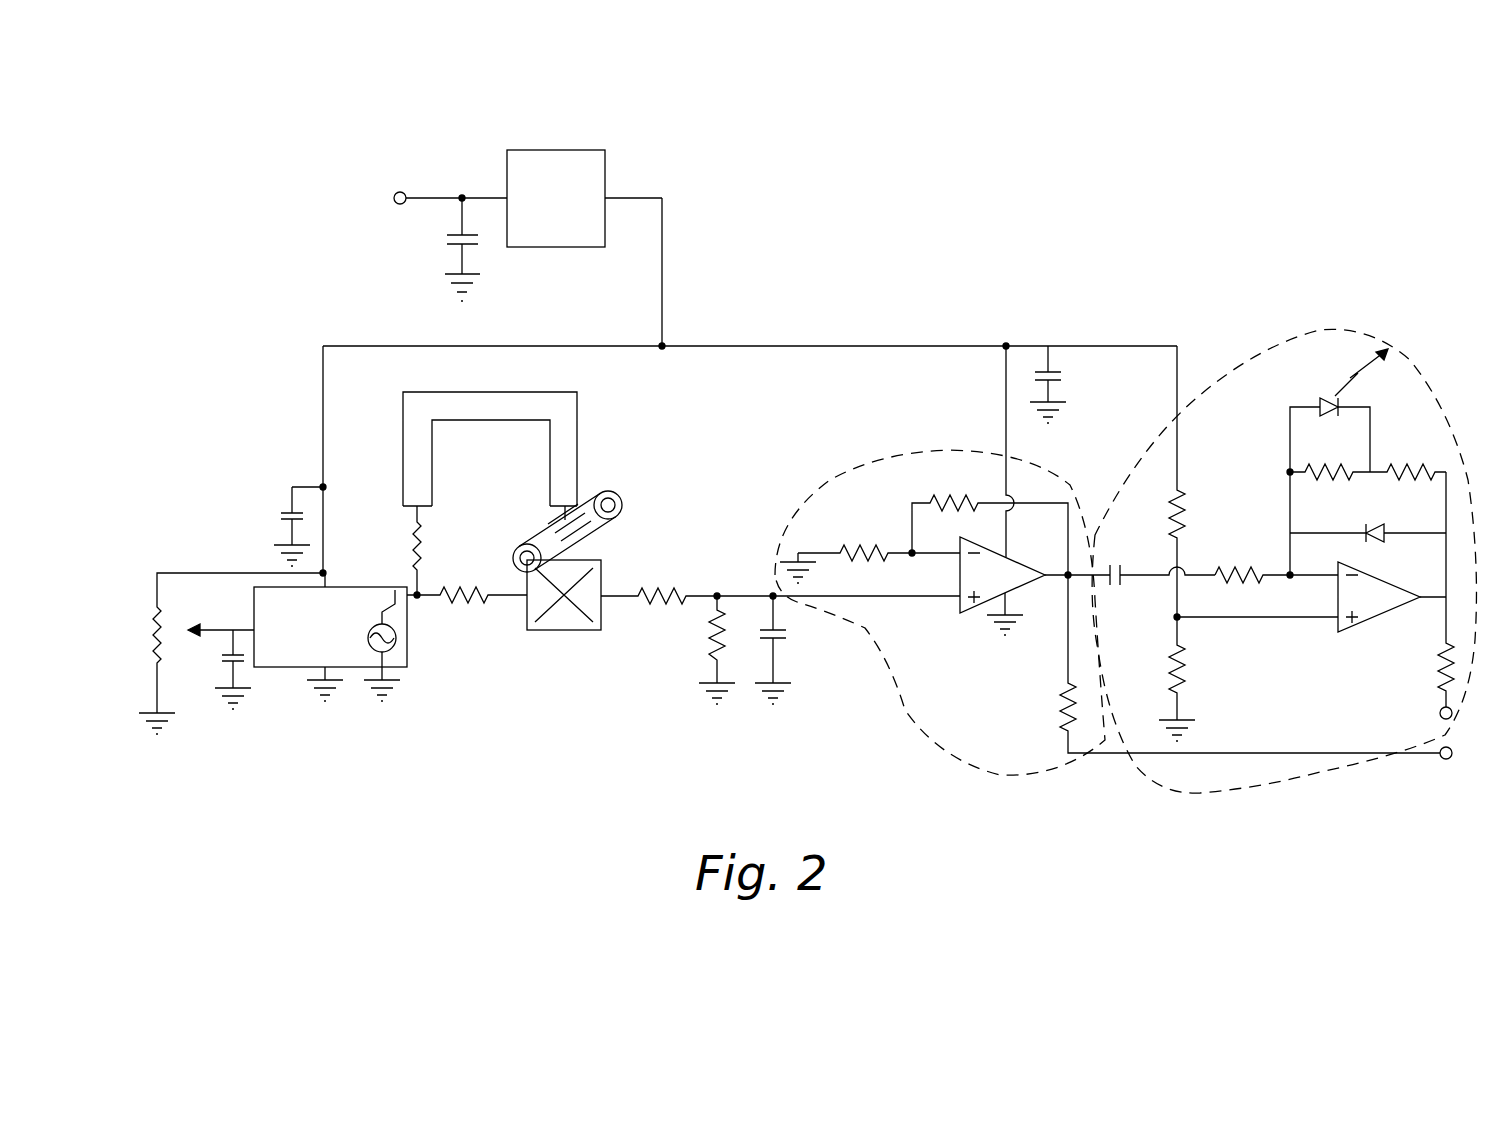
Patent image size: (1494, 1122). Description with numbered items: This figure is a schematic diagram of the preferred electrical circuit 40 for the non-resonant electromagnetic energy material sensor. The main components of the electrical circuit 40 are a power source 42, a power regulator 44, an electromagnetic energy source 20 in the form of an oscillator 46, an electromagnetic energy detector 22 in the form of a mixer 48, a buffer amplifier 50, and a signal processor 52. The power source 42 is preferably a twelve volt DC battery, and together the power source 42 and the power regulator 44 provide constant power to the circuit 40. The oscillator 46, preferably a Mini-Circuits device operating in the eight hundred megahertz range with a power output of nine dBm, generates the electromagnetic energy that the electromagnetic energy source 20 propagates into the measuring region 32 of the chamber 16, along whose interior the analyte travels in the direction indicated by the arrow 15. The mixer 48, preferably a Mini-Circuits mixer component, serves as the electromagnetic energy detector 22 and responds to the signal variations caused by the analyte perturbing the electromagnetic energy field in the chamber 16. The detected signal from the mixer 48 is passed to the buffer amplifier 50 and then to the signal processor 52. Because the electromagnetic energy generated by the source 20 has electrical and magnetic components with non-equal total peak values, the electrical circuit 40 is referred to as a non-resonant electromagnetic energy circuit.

The arrow 15 is at (633, 490).
The chamber 16 is at (548, 522).
The electromagnetic energy source 20 is at (322, 705).
The electromagnetic energy detector 22 is at (522, 643).
The measuring region 32 is at (622, 520).
The electrical circuit 40 is at (884, 214).
The power source 42 is at (396, 199).
The power regulator 44 is at (583, 152).
The oscillator 46 is at (343, 655).
The mixer 48 is at (602, 606).
The buffer amplifier 50 is at (945, 452).
The signal processor 52 is at (1362, 320).